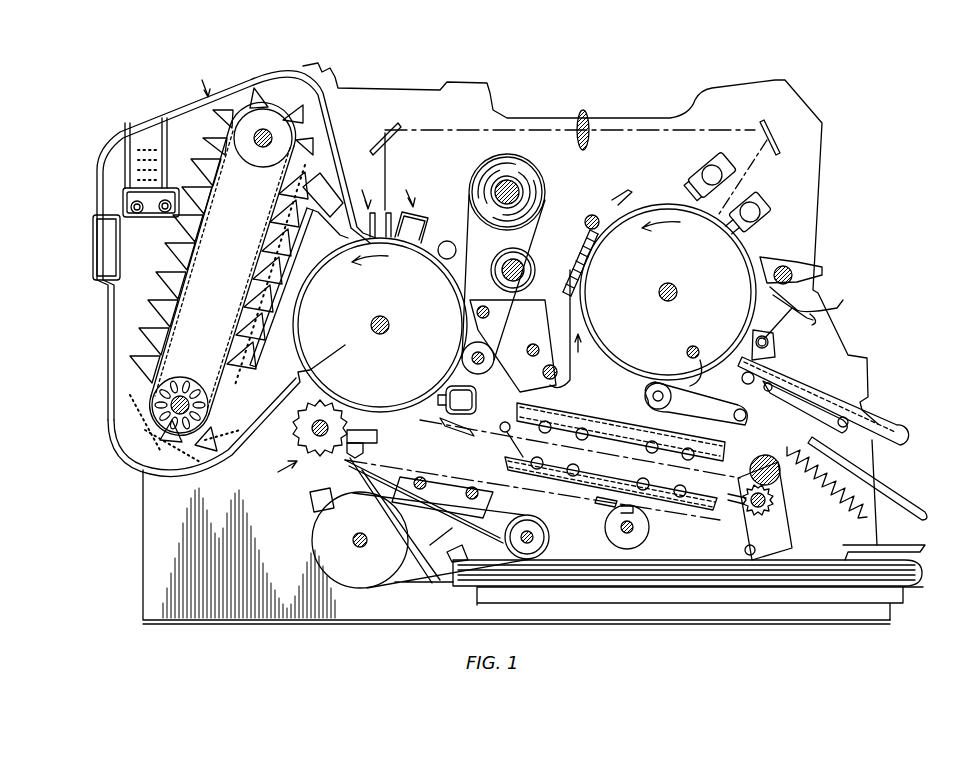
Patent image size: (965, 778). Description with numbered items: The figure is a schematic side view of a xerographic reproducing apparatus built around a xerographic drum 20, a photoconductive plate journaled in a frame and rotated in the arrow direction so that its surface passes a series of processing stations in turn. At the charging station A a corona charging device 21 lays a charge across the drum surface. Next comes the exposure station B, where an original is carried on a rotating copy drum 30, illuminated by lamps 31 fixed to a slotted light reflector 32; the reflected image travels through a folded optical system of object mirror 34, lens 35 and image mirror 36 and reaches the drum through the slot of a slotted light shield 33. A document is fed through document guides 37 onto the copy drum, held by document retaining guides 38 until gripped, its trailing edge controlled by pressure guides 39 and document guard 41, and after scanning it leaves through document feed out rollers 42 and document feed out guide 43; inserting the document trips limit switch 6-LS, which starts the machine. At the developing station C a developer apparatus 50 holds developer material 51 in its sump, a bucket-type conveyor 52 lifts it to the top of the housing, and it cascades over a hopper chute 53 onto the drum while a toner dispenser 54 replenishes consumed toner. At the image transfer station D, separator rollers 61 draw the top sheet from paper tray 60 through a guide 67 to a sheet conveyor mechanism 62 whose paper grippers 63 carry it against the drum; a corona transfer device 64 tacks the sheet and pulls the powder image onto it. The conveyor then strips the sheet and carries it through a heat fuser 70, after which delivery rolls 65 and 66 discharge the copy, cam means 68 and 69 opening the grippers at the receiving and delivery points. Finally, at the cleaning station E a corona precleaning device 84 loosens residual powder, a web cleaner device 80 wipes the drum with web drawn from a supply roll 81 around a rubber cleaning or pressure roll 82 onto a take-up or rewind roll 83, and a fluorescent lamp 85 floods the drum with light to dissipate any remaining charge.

The xerographic drum 20 is at (410, 418).
The corona charging device 21 is at (424, 214).
The copy drum 30 is at (640, 368).
The lamps 31 is at (752, 200).
The slotted light reflector 32 is at (724, 158).
The slotted light shield 33 is at (385, 215).
The object mirror 34 is at (772, 130).
The lens 35 is at (590, 128).
The image mirror 36 is at (394, 130).
The document guides 37 is at (826, 300).
The document retaining guides 38 is at (778, 256).
The pressure guides 39 is at (630, 192).
The document guard 41 is at (612, 366).
The document feed out rollers 42 is at (645, 404).
The document feed out guide 43 is at (910, 498).
The developer apparatus 50 is at (252, 86).
The developer material 51 is at (240, 412).
The bucket-type conveyor 52 is at (176, 262).
The toner dispenser 54 is at (161, 142).
The hopper chute 53 is at (338, 236).
The paper tray 60 is at (765, 590).
The separator rollers 61 is at (551, 538).
The sheet conveyor mechanism 62 is at (510, 490).
The paper grippers 63 is at (470, 430).
The corona transfer device 64 is at (380, 437).
The delivery roll 65 is at (780, 486).
The delivery roll 66 is at (778, 502).
The guide 67 is at (486, 520).
The cam means 68 is at (361, 447).
The cam means 69 is at (778, 516).
The heat fuser 70 is at (590, 412).
The web cleaner device 80 is at (544, 282).
The supply roll 81 is at (512, 190).
The cleaning or pressure roll 82 is at (487, 372).
The take-up or rewind roll 83 is at (524, 258).
The corona precleaning device 84 is at (478, 404).
The fluorescent lamp 85 is at (444, 240).
The limit switch 6-LS 6 is at (778, 350).
The charging station A is at (404, 189).
The exposure station B is at (361, 191).
The developing station C is at (197, 79).
The image transfer station D is at (304, 442).
The drum cleaning station E is at (525, 291).